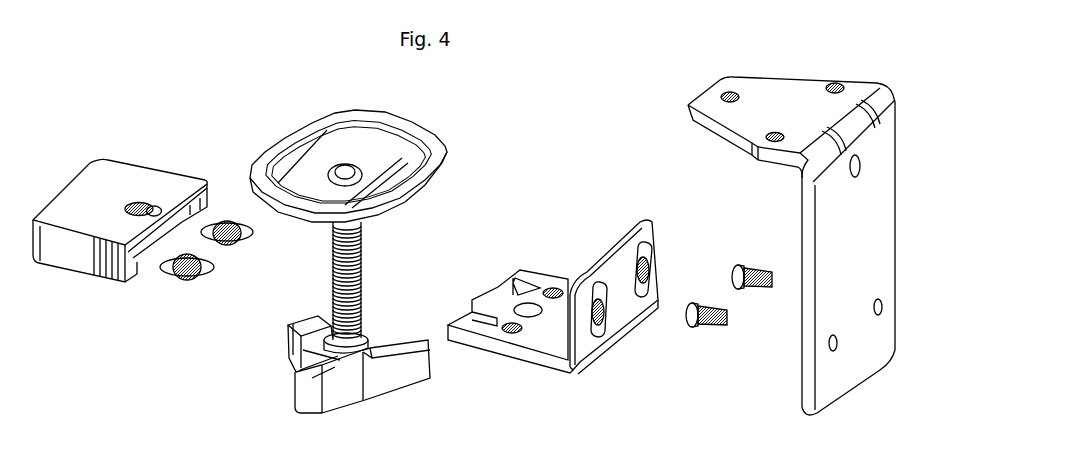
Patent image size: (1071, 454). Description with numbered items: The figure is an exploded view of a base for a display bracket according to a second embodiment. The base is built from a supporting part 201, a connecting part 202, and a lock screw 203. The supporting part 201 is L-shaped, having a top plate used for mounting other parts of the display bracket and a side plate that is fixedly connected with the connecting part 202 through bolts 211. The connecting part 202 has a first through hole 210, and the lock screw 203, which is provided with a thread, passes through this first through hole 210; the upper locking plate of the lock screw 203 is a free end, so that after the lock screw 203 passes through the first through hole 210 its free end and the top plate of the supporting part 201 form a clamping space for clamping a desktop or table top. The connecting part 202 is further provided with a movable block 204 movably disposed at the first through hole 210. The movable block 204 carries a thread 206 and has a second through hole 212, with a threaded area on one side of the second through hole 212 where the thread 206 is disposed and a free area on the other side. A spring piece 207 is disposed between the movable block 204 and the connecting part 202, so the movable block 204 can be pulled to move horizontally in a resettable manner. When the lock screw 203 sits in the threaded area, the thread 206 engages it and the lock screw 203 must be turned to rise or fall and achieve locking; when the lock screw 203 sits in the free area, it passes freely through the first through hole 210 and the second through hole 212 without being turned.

The supporting part 201 is at (875, 210).
The connecting part 202 is at (607, 248).
The lock screw 203 is at (362, 282).
The movable block 204 is at (83, 198).
The thread 206 is at (138, 203).
The spring piece 207 is at (190, 280).
The first through hole 210 is at (522, 303).
The bolts 211 is at (742, 263).
The second through hole 212 is at (155, 208).